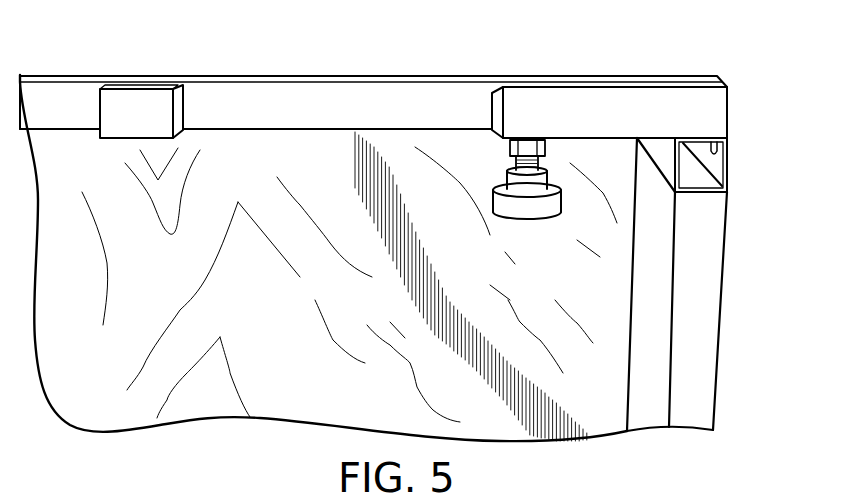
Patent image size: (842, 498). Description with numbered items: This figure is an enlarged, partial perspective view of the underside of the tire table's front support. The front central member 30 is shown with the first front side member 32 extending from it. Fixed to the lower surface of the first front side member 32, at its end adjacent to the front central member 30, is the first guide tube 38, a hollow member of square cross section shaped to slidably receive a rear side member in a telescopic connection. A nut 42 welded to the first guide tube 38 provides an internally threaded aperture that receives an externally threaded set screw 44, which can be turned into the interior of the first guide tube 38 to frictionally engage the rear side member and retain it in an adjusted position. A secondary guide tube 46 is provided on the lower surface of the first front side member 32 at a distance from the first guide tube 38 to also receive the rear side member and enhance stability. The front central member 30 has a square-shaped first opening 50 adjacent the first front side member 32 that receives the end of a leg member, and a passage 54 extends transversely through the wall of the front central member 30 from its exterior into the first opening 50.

The front central member 30 is at (695, 307).
The first front side member 32 is at (333, 103).
The first guide tube 38 is at (583, 113).
The nut 42 is at (528, 152).
The set screw 44 is at (547, 206).
The secondary guide tube 46 is at (138, 115).
The first opening 50 is at (707, 180).
The passage 54 is at (713, 145).